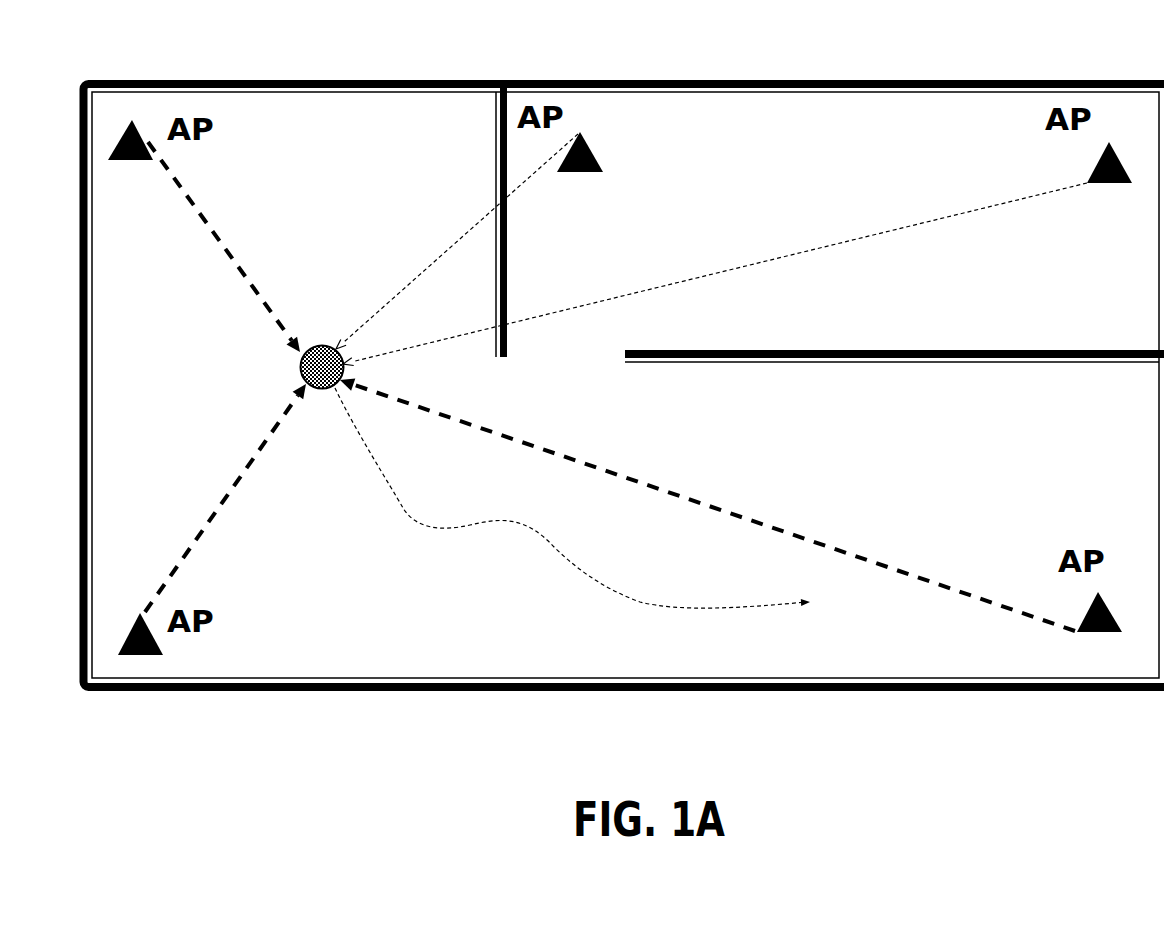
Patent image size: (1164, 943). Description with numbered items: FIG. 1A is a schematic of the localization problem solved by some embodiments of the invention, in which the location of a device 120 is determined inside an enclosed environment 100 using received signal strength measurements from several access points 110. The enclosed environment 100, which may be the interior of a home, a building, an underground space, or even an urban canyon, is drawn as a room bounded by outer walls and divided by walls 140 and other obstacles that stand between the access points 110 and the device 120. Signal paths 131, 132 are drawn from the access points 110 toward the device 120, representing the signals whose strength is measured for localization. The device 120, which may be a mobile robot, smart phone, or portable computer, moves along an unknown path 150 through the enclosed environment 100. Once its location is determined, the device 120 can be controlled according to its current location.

The enclosed environment 100 is at (354, 79).
The access point 110 is at (585, 135).
The device 120 is at (330, 346).
The line-of-sight signal path 131 is at (722, 273).
The signal path 132 is at (222, 238).
The wall 140 is at (940, 363).
The unknown path 150 is at (405, 510).